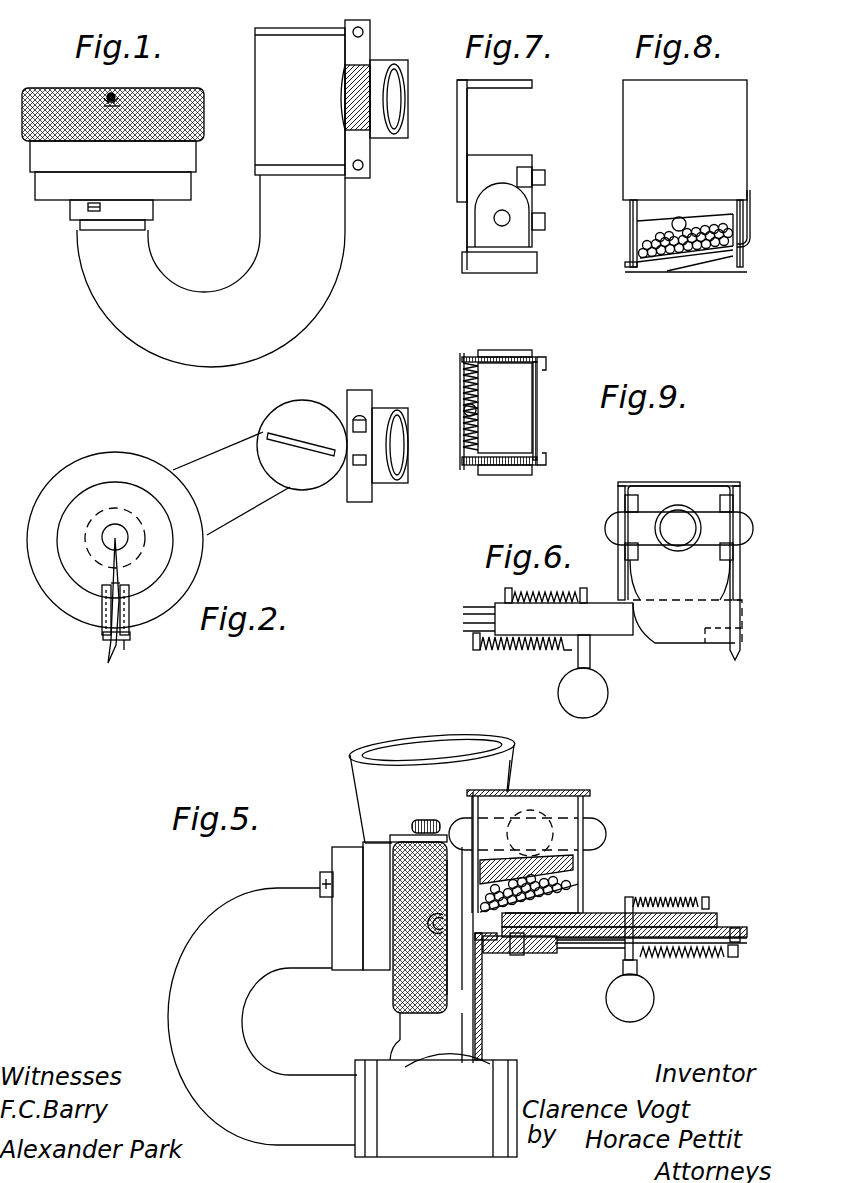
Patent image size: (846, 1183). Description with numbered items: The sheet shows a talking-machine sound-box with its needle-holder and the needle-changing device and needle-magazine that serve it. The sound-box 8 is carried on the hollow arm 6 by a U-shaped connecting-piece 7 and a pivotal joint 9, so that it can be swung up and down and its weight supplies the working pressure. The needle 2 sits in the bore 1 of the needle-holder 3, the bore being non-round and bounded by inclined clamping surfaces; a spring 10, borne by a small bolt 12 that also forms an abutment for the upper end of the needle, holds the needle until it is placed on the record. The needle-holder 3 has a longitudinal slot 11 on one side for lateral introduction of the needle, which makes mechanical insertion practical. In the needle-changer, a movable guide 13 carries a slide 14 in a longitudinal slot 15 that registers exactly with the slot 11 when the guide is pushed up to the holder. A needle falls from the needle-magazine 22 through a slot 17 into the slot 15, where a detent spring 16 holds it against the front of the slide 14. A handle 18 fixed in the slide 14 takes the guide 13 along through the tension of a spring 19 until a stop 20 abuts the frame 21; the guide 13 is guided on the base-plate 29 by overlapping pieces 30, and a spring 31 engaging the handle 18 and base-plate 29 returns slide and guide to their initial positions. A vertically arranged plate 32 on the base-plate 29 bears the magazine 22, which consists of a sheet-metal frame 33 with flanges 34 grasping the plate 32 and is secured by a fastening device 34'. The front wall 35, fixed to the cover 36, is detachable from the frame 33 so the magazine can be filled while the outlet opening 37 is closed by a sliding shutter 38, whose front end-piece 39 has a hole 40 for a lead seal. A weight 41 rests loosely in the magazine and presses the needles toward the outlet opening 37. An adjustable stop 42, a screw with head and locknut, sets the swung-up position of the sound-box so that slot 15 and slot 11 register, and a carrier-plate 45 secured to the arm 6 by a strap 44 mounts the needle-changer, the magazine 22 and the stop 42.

In FIG. 1, the bore 1 is at (116, 95).
In FIG. 2, the bore 1 is at (130, 636).
In FIG. 2, the needle 2 is at (109, 655).
In FIG. 9, the needle 2 is at (474, 376).
In FIG. 5, the needle 2 is at (522, 858).
In FIG. 1, the needle-holder 3 is at (108, 94).
In FIG. 2, the needle-holder 3 is at (112, 577).
In FIG. 5, the needle-holder 3 is at (394, 921).
In FIG. 1, the hollow arm 6 is at (382, 64).
In FIG. 2, the hollow arm 6 is at (384, 412).
In FIG. 5, the hollow arm 6 is at (432, 786).
In FIG. 1, the U-shaped connecting-piece 7 is at (211, 271).
In FIG. 2, the U-shaped connecting-piece 7 is at (231, 483).
In FIG. 5, the U-shaped connecting-piece 7 is at (262, 1016).
In FIG. 1, the sound-box 8 is at (113, 159).
In FIG. 2, the sound-box 8 is at (115, 540).
In FIG. 5, the sound-box 8 is at (397, 836).
In FIG. 1, the pivotal joint 9 is at (312, 99).
In FIG. 2, the pivotal joint 9 is at (314, 446).
In FIG. 5, the pivotal joint 9 is at (436, 1105).
In FIG. 1, the spring 10 is at (122, 99).
In FIG. 2, the spring 10 is at (126, 642).
In FIG. 5, the spring 10 is at (428, 927).
In FIG. 1, the longitudinal slot 11 is at (110, 93).
In FIG. 2, the longitudinal slot 11 is at (102, 600).
In FIG. 5, the longitudinal slot 11 is at (395, 940).
In FIG. 1, the small bolt 12 is at (113, 93).
In FIG. 2, the small bolt 12 is at (126, 592).
In FIG. 6, the movable guide 13 is at (564, 619).
In FIG. 5, the movable guide 13 is at (578, 916).
In FIG. 6, the slide 14 is at (464, 615).
In FIG. 5, the slide 14 is at (620, 912).
In FIG. 5, the longitudinal slot 15 is at (449, 925).
In FIG. 5, the detent spring 16 is at (490, 954).
In FIG. 5, the slot 17 is at (560, 912).
In FIG. 6, the handle 18 is at (600, 676).
In FIG. 5, the handle 18 is at (650, 1008).
In FIG. 6, the spring 19 is at (553, 596).
In FIG. 5, the spring 19 is at (682, 902).
In FIG. 6, the stop 20 is at (706, 632).
In FIG. 6, the frame 21 is at (740, 650).
In FIG. 5, the frame 21 is at (483, 1042).
In FIG. 5, the needle-magazine 22 is at (522, 796).
In FIG. 6, the base-plate 29 is at (470, 636).
In FIG. 5, the base-plate 29 is at (749, 940).
In FIG. 5, the overlapping pieces 30 is at (590, 948).
In FIG. 6, the spring 31 is at (532, 650).
In FIG. 5, the spring 31 is at (693, 958).
In FIG. 6, the vertically arranged plate 32 is at (686, 601).
In FIG. 7, the sheet-metal frame 33 is at (488, 161).
In FIG. 8, the sheet-metal frame 33 is at (630, 232).
In FIG. 9, the sheet-metal frame 33 is at (467, 356).
In FIG. 6, the sheet-metal frame 33 is at (618, 503).
In FIG. 5, the sheet-metal frame 33 is at (585, 807).
In FIG. 7, the flanges 34 is at (558, 210).
In FIG. 9, the flanges 34 is at (559, 410).
In FIG. 6, the flanges 34 is at (705, 527).
In FIG. 6, the fastening device 34' is at (679, 544).
In FIG. 7, the front wall 35 is at (458, 138).
In FIG. 8, the front wall 35 is at (685, 140).
In FIG. 9, the front wall 35 is at (461, 404).
In FIG. 7, the cover 36 is at (503, 88).
In FIG. 6, the cover 36 is at (730, 482).
In FIG. 5, the cover 36 is at (588, 791).
In FIG. 8, the outlet opening 37 is at (668, 274).
In FIG. 8, the sliding shutter 38 is at (713, 262).
In FIG. 9, the sliding shutter 38 is at (524, 475).
In FIG. 7, the front end-piece 39 is at (502, 215).
In FIG. 8, the front end-piece 39 is at (750, 204).
In FIG. 9, the front end-piece 39 is at (500, 476).
In FIG. 7, the hole 40 is at (495, 220).
In FIG. 8, the weight 41 is at (686, 237).
In FIG. 9, the weight 41 is at (505, 408).
In FIG. 5, the weight 41 is at (529, 870).
In FIG. 5, the adjustable stop 42 is at (432, 821).
In FIG. 5, the strap 44 is at (392, 1052).
In FIG. 5, the carrier-plate 45 is at (466, 1027).